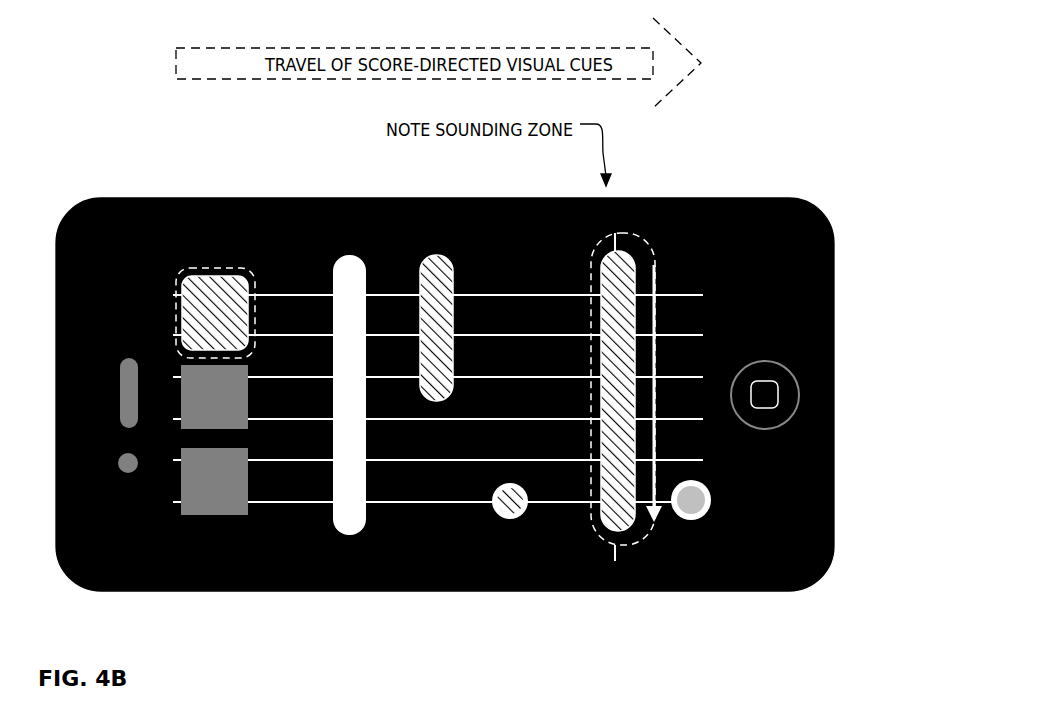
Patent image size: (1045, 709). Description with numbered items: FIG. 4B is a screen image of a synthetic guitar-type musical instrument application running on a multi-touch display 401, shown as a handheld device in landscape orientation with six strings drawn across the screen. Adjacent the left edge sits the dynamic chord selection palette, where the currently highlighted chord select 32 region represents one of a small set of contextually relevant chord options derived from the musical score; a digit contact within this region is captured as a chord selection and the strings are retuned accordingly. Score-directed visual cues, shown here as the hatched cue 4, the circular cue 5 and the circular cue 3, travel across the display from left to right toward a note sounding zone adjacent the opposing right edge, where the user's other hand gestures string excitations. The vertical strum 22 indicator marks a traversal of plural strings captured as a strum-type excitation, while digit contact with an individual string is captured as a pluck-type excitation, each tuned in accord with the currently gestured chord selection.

The mobile device display 401 is at (176, 190).
The chord select cue 32 is at (212, 262).
The cue 4 (note sounding zone cue) 4 is at (593, 250).
The strum indicator 22 is at (647, 350).
The cue 5 is at (487, 506).
The cue 3 is at (703, 495).